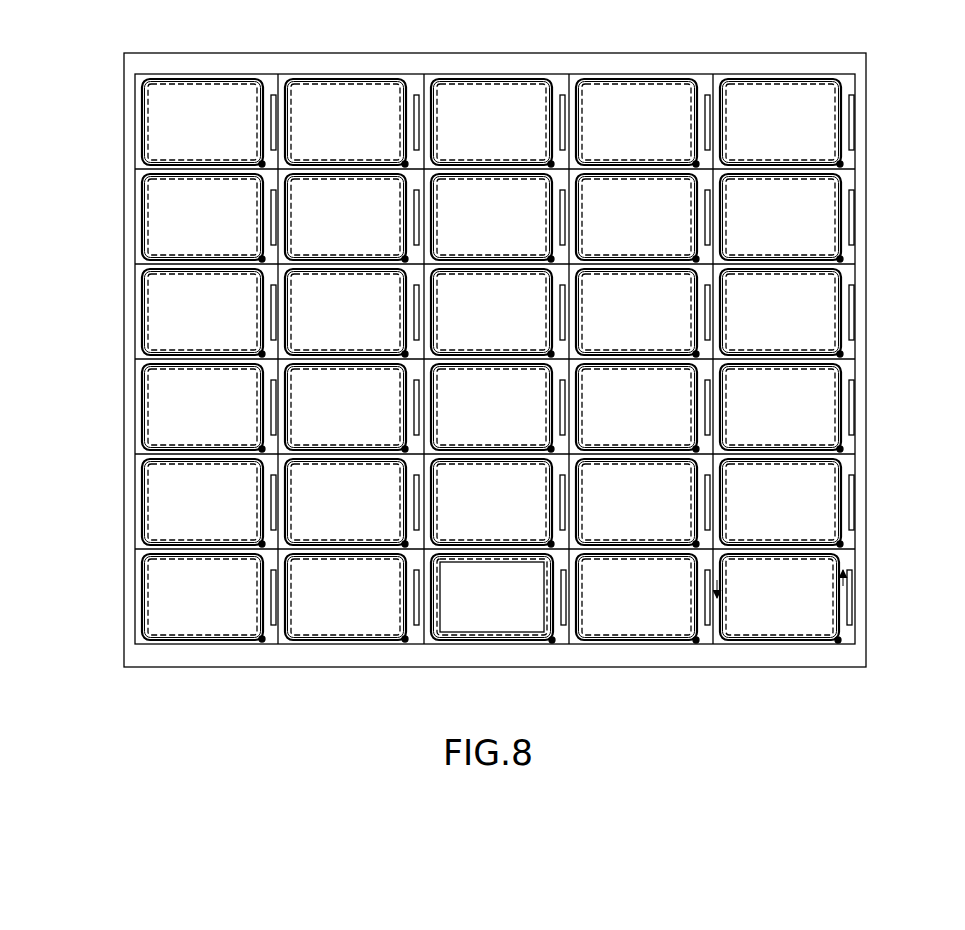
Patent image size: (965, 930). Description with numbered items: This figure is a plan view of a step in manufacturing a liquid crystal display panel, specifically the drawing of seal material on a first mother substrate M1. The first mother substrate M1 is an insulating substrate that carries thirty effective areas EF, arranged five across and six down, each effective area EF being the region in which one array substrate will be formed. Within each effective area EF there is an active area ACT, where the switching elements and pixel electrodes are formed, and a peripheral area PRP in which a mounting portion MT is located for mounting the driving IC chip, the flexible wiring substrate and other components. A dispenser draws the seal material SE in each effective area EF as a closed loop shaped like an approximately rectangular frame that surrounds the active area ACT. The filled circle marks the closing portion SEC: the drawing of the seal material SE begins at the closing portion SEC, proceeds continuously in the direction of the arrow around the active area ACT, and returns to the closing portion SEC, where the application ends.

The first mother substrate M1 is at (875, 61).
The mounting portion MT is at (563, 625).
The active area ACT is at (605, 634).
The peripheral area PRP is at (631, 652).
The seal material SE is at (654, 640).
The effective area EF is at (682, 652).
The closing portion SEC is at (840, 637).